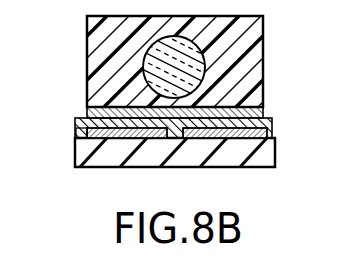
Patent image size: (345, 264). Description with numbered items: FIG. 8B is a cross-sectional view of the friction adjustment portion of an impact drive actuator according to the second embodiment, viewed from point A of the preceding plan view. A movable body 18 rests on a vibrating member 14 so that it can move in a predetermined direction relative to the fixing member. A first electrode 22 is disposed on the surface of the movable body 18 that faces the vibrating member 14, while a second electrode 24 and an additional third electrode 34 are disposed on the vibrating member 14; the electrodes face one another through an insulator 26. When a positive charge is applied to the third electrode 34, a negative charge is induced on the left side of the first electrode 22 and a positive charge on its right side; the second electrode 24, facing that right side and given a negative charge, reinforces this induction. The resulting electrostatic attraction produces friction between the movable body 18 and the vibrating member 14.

The vibrating member 14 is at (271, 152).
The movable body 18 is at (259, 67).
The first electrode 22 is at (258, 112).
The second electrode 24 is at (268, 133).
The insulator 26 is at (75, 120).
The third electrode 34 is at (78, 131).